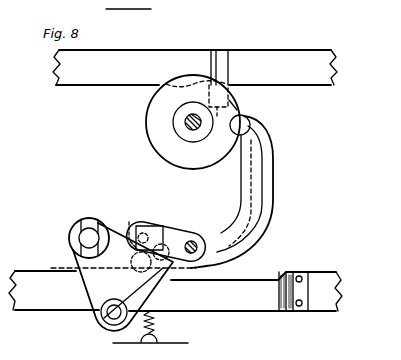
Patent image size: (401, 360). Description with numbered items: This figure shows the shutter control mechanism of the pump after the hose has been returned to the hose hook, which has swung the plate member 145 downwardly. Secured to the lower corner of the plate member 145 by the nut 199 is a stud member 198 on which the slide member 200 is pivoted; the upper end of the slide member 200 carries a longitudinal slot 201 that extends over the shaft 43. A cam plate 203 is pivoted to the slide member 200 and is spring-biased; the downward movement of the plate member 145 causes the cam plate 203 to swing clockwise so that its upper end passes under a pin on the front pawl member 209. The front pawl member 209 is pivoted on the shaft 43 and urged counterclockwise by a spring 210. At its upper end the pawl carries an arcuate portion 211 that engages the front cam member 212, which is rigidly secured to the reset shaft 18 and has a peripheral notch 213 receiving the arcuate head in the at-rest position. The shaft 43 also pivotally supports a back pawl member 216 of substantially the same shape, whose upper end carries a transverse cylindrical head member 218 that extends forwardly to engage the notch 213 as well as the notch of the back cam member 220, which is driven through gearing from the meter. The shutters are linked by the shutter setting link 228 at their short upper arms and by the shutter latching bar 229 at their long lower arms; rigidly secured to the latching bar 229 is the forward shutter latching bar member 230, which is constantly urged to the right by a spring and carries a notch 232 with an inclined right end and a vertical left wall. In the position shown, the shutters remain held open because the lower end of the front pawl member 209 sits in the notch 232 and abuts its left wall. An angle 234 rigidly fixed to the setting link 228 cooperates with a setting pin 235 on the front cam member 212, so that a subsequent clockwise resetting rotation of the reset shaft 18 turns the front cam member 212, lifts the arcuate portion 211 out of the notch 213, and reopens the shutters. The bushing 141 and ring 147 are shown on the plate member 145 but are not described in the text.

The reset shaft 18 is at (182, 124).
The shaft 43 is at (197, 246).
The bushing 141 is at (90, 232).
The plate member 145 is at (88, 283).
The bushing ring 147 is at (68, 238).
The stud member 198 is at (158, 298).
The nut 199 is at (99, 312).
The slide member 200 is at (185, 229).
The longitudinal slot 201 is at (187, 268).
The cam plate 203 is at (149, 239).
The front pawl member 209 is at (250, 160).
The spring 210 is at (153, 322).
The arcuate portion 211 is at (252, 125).
The front cam member 212 is at (160, 150).
The peripheral notch 213 is at (238, 107).
The back pawl member 216 is at (270, 172).
The transverse cylindrical head member 218 is at (263, 138).
The back cam member 220 is at (238, 107).
The shutter setting link 228 is at (332, 70).
The shutter latching bar 229 is at (330, 305).
The forward shutter latching bar member 230 is at (247, 303).
The notch 232 is at (240, 280).
The angle 234 is at (225, 72).
The setting pin 235 is at (218, 119).